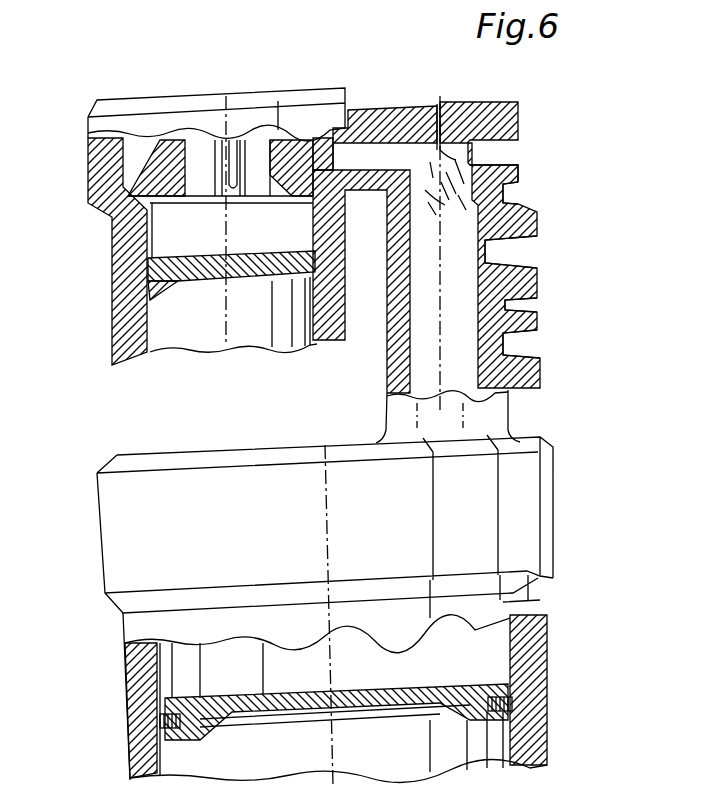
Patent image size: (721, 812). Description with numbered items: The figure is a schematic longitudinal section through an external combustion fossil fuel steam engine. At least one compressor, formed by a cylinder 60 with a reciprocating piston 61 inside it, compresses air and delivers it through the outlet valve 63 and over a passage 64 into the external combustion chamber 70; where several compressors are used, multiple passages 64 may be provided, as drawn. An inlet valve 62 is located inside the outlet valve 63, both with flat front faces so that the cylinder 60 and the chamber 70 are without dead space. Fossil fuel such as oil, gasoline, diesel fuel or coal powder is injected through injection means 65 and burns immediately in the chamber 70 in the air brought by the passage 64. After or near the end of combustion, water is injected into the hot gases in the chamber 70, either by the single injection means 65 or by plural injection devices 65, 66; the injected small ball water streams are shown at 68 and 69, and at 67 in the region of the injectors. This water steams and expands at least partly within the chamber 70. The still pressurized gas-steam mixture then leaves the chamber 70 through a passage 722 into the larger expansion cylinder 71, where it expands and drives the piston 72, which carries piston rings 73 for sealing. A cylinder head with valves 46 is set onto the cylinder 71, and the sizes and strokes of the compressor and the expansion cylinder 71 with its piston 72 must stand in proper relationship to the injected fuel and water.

The cylinder head with valves 46 is at (103, 122).
The cylinder 60 is at (122, 312).
The reciprocating piston 61 is at (202, 323).
The inlet valve 62 is at (202, 196).
The outlet valve 63 is at (170, 168).
The passage 64 is at (510, 150).
The injection means 65 is at (420, 108).
The injection device 66 is at (523, 347).
The lip 67 is at (505, 177).
The injected water streams 68 is at (505, 207).
The injected water streams 69 is at (470, 300).
The external combustion chamber 70 is at (417, 418).
The passage 722 is at (463, 418).
The expansion cylinder 71 is at (473, 643).
The piston 72 is at (232, 712).
The piston rings 73 is at (176, 732).